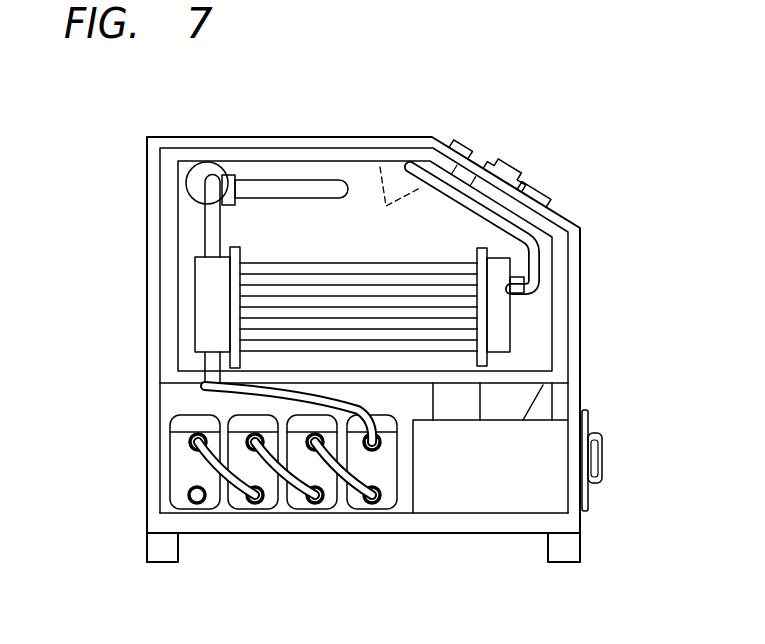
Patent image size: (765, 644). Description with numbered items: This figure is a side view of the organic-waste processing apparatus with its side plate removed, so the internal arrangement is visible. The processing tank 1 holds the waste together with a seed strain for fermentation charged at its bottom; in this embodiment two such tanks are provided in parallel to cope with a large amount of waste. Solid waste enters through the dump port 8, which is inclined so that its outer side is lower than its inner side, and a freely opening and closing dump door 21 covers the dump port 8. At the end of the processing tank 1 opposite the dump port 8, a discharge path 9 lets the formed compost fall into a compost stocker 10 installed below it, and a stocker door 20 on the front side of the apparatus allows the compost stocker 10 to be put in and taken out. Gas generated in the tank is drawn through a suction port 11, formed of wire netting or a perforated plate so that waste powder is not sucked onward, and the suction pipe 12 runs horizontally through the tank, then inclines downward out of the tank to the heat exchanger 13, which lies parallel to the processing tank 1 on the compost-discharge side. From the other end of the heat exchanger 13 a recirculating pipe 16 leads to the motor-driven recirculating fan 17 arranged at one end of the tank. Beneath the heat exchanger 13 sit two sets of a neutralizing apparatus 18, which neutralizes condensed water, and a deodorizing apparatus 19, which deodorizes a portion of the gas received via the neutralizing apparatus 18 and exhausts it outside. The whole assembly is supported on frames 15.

The processing tank 1 is at (193, 418).
The dump port 8 is at (515, 203).
The discharge path 9 is at (474, 401).
The compost stocker 10 is at (470, 499).
The suction port 11 is at (395, 162).
The suction pipe 12 is at (453, 190).
The heat exchanger 13 is at (282, 275).
The frames 15 is at (217, 522).
The recirculating pipe 16 is at (258, 183).
The recirculating fan 17 is at (198, 168).
The neutralizing apparatus 18 is at (387, 470).
The deodorizing apparatus 19 is at (268, 484).
The stocker door 20 is at (588, 494).
The dump door 21 is at (512, 150).